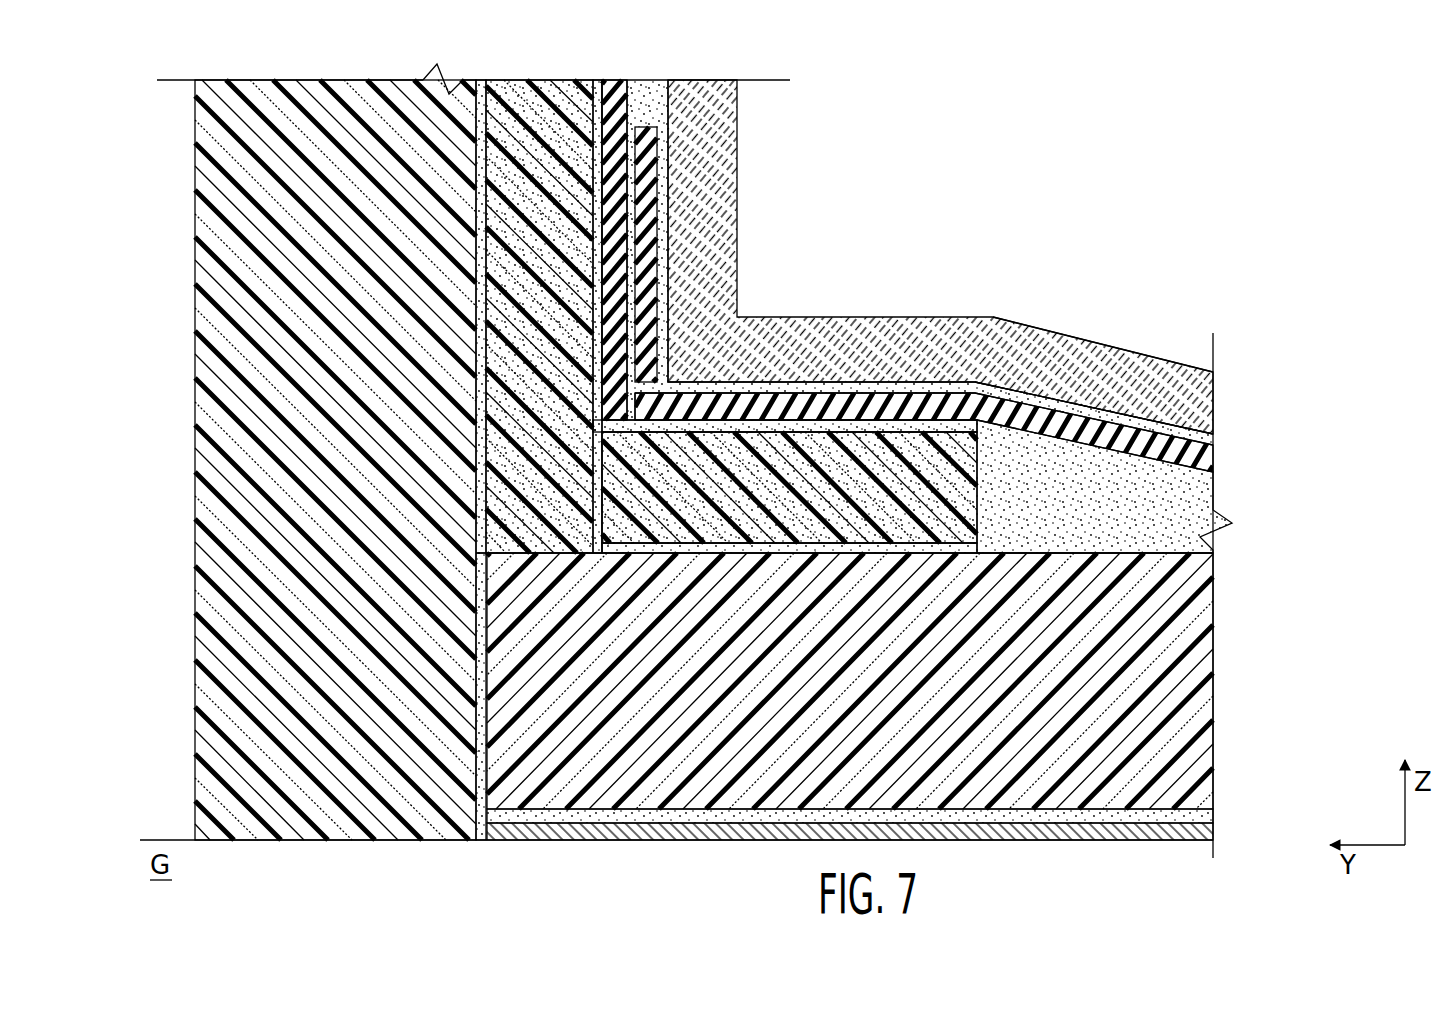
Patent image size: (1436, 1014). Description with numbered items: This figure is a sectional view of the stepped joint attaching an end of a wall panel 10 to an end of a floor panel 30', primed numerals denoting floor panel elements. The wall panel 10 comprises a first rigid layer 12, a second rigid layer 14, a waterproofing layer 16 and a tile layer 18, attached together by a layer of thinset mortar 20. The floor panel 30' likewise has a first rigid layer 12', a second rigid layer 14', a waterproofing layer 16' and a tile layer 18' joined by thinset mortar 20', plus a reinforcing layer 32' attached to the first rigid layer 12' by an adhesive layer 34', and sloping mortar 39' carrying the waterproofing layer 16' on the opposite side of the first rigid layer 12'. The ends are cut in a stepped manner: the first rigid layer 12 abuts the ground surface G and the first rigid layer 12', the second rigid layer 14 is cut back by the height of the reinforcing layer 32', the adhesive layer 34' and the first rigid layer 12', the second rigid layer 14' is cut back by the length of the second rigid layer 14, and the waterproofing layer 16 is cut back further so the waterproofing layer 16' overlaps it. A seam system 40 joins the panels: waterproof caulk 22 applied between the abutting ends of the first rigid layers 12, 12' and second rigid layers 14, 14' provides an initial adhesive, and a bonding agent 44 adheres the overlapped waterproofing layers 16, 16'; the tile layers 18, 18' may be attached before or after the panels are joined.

The wall panel 10 is at (128, 196).
The first rigid layer 12 is at (296, 460).
The second rigid layer 14 is at (537, 286).
The waterproofing layer 16 is at (602, 216).
The tile layer 18 is at (940, 257).
The layer of thinset mortar 20 is at (808, 431).
The waterproof caulk 22 is at (603, 488).
The bonding agent 44 is at (647, 200).
The first rigid layer 12' is at (898, 681).
The second rigid layer 14' is at (789, 409).
The waterproofing layer 16' is at (962, 322).
The tile layer 18' is at (1094, 333).
The thinset mortar 20' is at (974, 411).
The floor panel 30' is at (1155, 619).
The reinforcing layer 32' is at (850, 851).
The adhesive layer 34' is at (879, 789).
The sloping mortar 39' is at (1143, 486).
The seam system 40 is at (481, 870).